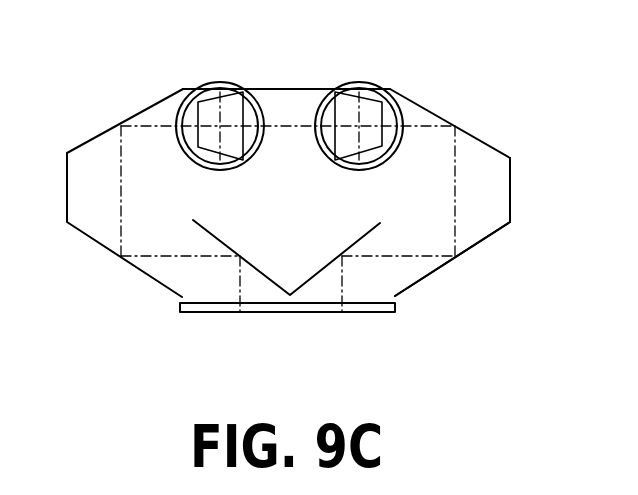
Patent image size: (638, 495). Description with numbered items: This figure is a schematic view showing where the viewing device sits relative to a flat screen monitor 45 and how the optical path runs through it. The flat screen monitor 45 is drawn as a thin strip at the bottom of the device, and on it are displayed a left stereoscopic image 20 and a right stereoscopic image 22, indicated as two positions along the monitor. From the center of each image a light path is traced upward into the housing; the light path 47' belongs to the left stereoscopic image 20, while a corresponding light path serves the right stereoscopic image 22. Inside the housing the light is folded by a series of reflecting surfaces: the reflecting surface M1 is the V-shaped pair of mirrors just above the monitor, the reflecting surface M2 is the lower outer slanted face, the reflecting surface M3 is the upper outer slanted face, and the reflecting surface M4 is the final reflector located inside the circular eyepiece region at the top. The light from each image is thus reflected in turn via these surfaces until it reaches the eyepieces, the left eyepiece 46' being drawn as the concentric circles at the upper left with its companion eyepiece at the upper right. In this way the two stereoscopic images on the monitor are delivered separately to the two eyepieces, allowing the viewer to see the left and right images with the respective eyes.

The eyepiece 46' is at (203, 96).
The reflecting surface M4 is at (360, 115).
The reflecting surface M3 is at (505, 102).
The reflecting surface M2 is at (500, 252).
The reflecting surface M1 is at (352, 247).
The light path 47' is at (159, 191).
The flat screen monitor 45 is at (180, 307).
The left stereoscopic image 20 is at (242, 312).
The right stereoscopic image 22 is at (342, 312).